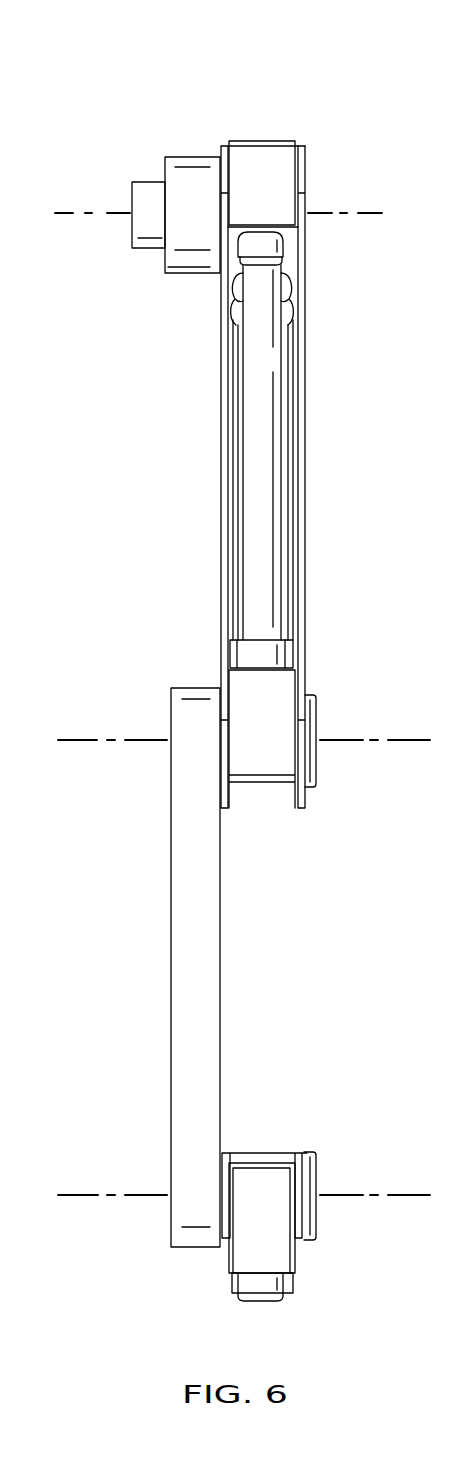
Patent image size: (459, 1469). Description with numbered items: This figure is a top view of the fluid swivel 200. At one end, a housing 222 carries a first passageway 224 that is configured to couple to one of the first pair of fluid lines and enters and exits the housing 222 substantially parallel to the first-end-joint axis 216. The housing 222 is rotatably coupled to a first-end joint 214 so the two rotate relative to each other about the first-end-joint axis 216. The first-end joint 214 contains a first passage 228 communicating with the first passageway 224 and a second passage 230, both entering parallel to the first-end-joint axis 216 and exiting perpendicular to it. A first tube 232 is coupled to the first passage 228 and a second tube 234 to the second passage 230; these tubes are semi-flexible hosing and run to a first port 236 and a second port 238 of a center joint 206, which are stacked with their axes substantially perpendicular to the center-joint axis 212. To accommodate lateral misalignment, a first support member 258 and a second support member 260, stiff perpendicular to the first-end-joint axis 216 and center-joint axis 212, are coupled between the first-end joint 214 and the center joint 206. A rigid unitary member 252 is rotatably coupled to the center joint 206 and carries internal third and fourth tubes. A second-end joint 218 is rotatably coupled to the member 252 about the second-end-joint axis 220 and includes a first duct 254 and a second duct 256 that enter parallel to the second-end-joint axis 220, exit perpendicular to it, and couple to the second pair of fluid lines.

The fluid swivel 200 is at (141, 86).
The center joint 206 is at (255, 758).
The center-joint axis 212 is at (83, 740).
The first-end joint 214 is at (262, 146).
The first-end-joint axis 216 is at (67, 213).
The second-end joint 218 is at (260, 1183).
The second-end-joint axis 220 is at (82, 1195).
The housing 222 is at (193, 157).
The first passageway 224 is at (145, 182).
The first passage 228 is at (283, 260).
The second passage 230 is at (288, 297).
The first tube 232 is at (267, 358).
The second tube 234 is at (283, 413).
The first port 236 is at (293, 657).
The second port 238 is at (233, 653).
The rigid unitary member 252 is at (171, 967).
The first duct 254 is at (260, 1293).
The second duct 256 is at (293, 1283).
The first support member 258 is at (220, 430).
The second support member 260 is at (305, 493).